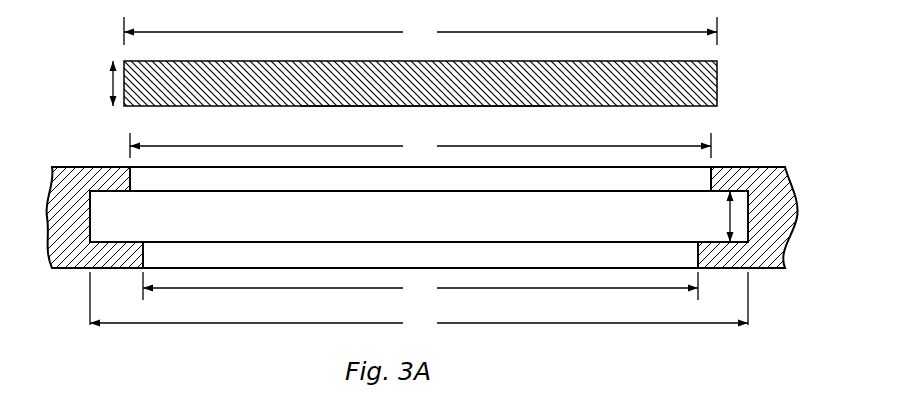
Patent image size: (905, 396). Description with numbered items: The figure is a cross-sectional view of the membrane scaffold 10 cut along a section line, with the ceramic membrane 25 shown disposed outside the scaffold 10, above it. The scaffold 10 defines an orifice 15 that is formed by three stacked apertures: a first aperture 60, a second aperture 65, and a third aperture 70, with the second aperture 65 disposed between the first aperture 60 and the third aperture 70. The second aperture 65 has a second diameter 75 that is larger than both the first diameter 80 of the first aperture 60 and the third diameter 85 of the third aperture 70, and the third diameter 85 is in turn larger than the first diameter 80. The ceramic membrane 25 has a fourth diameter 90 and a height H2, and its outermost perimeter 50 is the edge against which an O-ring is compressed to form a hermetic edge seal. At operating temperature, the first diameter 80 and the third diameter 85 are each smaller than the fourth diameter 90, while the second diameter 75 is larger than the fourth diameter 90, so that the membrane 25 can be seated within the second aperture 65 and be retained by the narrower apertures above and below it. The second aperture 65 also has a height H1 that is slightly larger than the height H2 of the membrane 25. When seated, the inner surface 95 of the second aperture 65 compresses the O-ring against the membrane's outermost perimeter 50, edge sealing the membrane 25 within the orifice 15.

The scaffold 10 is at (421, 169).
The orifice 15 is at (679, 134).
The ceramic membrane 25 is at (428, 100).
The outermost perimeter of the membrane 50 is at (717, 78).
The first aperture 60 is at (410, 262).
The second aperture 65 is at (410, 222).
The third aperture 70 is at (410, 188).
The second diameter 75 is at (419, 302).
The first diameter 80 is at (420, 286).
The third diameter 85 is at (420, 145).
The fourth diameter 90 is at (420, 31).
The inner surface of the second aperture 95 is at (92, 200).
The height of the second aperture H1 is at (719, 216).
The height of the ceramic membrane H2 is at (101, 83).